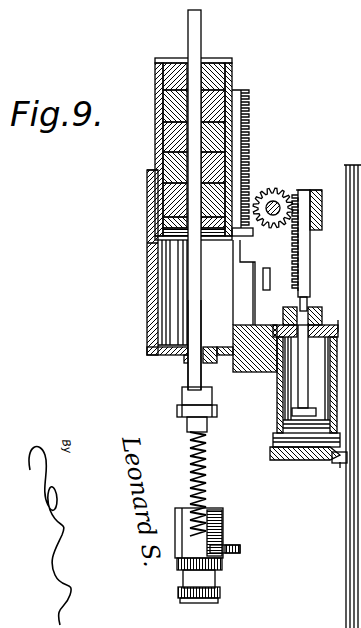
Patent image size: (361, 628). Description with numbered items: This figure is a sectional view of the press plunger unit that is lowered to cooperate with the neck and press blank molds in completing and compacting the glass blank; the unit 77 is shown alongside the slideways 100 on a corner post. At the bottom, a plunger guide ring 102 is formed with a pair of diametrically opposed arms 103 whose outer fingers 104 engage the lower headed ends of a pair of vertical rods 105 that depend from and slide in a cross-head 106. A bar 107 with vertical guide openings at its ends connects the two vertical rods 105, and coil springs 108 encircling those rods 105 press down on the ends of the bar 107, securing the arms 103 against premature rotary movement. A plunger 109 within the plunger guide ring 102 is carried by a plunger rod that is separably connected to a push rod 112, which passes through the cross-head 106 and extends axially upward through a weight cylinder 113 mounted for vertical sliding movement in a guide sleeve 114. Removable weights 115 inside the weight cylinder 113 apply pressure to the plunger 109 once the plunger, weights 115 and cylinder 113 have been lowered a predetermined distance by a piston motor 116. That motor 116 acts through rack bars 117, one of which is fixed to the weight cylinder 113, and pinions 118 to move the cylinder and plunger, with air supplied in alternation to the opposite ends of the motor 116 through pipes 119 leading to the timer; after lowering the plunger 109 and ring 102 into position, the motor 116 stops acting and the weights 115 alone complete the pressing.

The casing 77 is at (140, 309).
The slideways 100 is at (360, 622).
The plunger guide ring 102 is at (215, 538).
The arms 103 is at (228, 566).
The fingers 104 is at (218, 580).
The vertical rods 105 is at (206, 482).
The cross-head 106 is at (207, 426).
The bar 107 is at (240, 553).
The coil springs 108 is at (208, 500).
The plunger 109 is at (200, 603).
The push rod 112 is at (198, 328).
The weight cylinder 113 is at (155, 146).
The guide sleeve 114 is at (150, 245).
The removable weights 115 is at (205, 60).
The piston motor 116 is at (303, 453).
The rack bars 117 is at (240, 90).
The pinions 118 is at (280, 190).
The pipes 119 is at (338, 330).